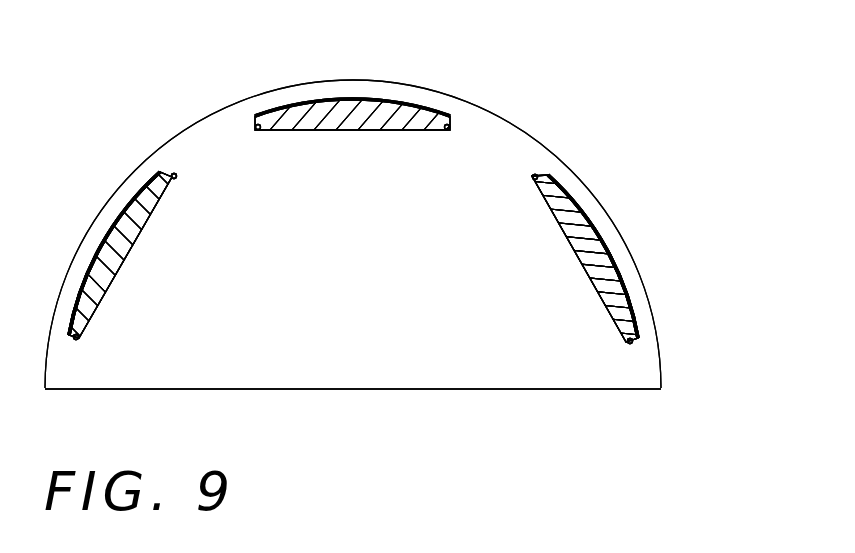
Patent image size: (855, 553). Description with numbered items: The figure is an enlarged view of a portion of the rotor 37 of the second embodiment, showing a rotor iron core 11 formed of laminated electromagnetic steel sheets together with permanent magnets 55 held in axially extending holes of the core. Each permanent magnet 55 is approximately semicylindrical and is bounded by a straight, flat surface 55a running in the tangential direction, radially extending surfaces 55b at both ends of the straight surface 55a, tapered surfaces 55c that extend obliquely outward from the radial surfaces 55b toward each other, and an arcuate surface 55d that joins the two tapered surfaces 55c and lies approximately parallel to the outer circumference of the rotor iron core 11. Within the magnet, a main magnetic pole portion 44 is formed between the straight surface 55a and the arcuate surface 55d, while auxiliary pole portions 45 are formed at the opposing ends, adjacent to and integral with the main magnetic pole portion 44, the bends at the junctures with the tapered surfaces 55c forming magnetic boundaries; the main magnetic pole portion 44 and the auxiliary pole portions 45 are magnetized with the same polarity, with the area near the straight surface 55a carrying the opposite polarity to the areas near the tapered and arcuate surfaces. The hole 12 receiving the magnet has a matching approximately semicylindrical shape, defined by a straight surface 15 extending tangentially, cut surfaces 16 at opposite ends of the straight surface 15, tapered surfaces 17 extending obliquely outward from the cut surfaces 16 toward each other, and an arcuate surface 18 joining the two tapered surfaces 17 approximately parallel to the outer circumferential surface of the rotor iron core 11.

The rotor iron core 11 is at (388, 346).
The hole 12 is at (118, 257).
The straight surface 15 is at (118, 226).
The cut surfaces 16 is at (176, 178).
The tapered surfaces 17 is at (162, 176).
The arcuate surface 18 is at (112, 282).
The rotor 37 is at (530, 94).
The main magnetic pole portion 44 is at (350, 114).
The auxiliary pole portions 45 is at (256, 128).
The permanent magnet 55 is at (379, 104).
The straight surface 55a is at (573, 256).
The radially extending surfaces 55b is at (531, 176).
The tapered surfaces 55c is at (540, 172).
The arcuate surface 55d is at (610, 241).